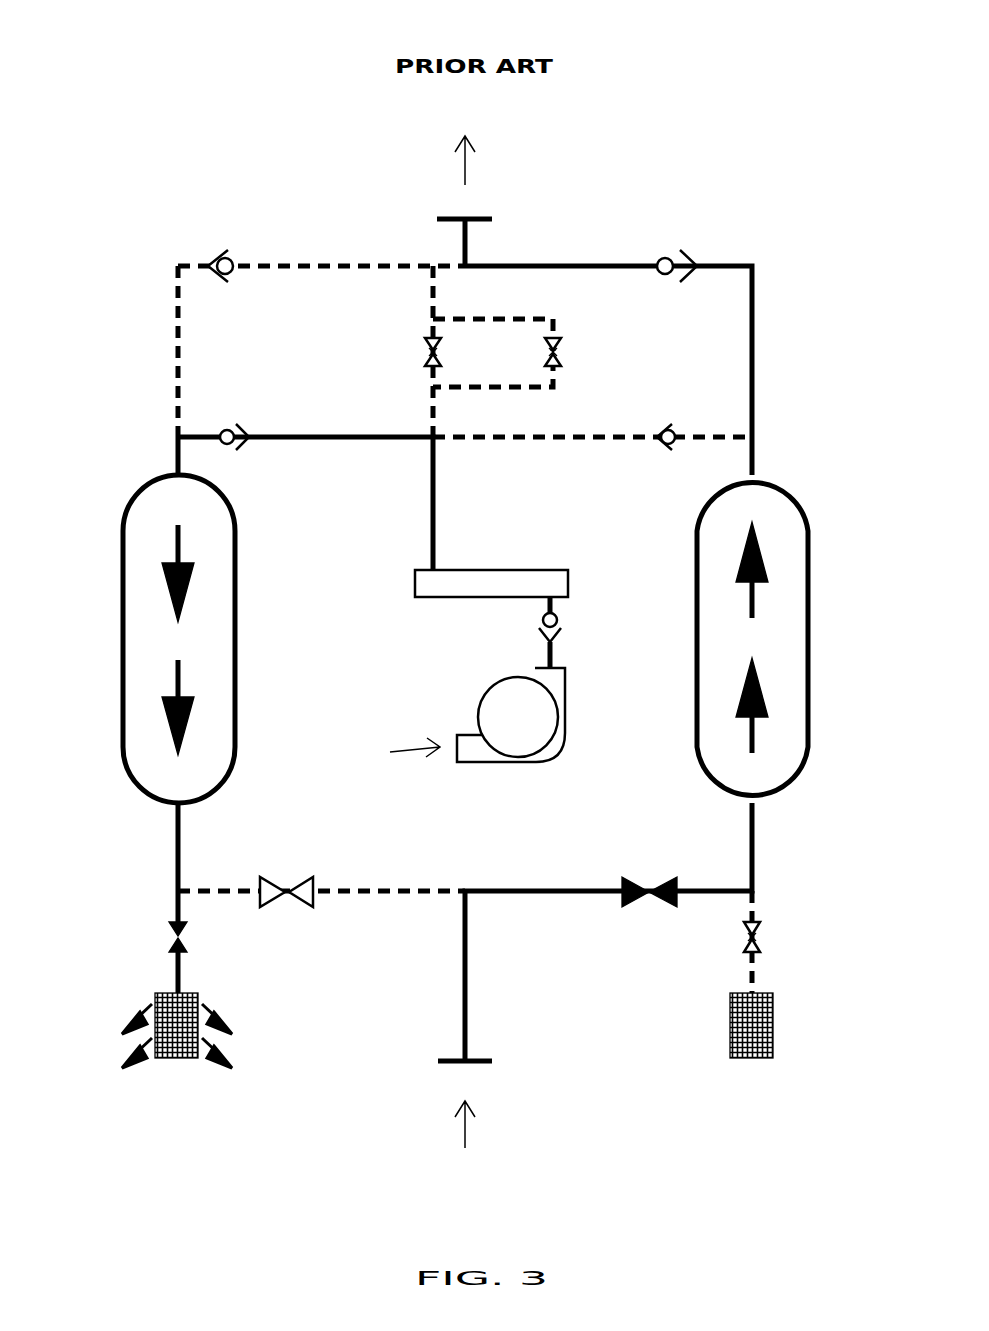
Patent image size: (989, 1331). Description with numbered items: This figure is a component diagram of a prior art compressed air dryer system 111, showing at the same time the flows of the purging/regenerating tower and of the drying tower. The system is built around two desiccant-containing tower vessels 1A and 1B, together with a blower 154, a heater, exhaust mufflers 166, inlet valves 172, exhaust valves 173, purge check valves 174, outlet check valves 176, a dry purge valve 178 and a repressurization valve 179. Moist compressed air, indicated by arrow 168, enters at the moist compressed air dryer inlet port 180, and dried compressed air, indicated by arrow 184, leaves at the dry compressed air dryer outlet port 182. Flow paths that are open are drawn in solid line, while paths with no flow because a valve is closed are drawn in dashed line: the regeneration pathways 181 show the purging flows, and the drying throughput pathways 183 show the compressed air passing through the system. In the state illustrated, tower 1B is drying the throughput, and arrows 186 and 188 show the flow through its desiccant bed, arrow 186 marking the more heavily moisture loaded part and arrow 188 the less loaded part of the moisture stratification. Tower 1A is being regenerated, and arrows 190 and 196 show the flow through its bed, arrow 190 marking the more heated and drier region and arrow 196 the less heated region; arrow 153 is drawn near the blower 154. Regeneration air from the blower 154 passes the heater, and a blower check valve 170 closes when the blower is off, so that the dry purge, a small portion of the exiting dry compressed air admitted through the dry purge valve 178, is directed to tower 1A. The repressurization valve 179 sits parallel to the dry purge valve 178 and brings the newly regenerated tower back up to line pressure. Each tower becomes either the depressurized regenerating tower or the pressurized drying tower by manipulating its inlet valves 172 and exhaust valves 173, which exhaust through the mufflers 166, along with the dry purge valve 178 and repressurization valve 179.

The dryer system 111 is at (76, 105).
The air flow direction arrow 153 is at (405, 752).
The blower 154 is at (482, 692).
The exhaust mufflers 166 is at (178, 1062).
The arrow indicating moist compressed air in flow 168 is at (463, 1142).
The blower check valve 170 is at (540, 636).
The inlet valves 172 is at (292, 880).
The exhaust valves 173 is at (170, 938).
The purge check valves 174 is at (242, 430).
The outlet check valves 176 is at (692, 262).
The dry purge valve 178 is at (425, 352).
The repressurization valve 179 is at (560, 356).
The moist compressed air dryer inlet port 180 is at (492, 1062).
The regeneration pathways 181 is at (176, 440).
The dry compressed air dryer outlet port 182 is at (462, 212).
The drying throughput pathways 183 is at (590, 264).
The arrow indicating dried compressed air out flow 184 is at (465, 172).
The arrow showing drying tower desiccant bed flow 186 is at (765, 690).
The arrow showing drying tower desiccant bed flow 188 is at (756, 552).
The arrow showing regenerating tower desiccant bed flow 190 is at (188, 592).
The arrow showing regenerating tower desiccant bed flow 196 is at (188, 725).
The tower vessel 1A is at (122, 556).
The tower vessel 1B is at (810, 557).